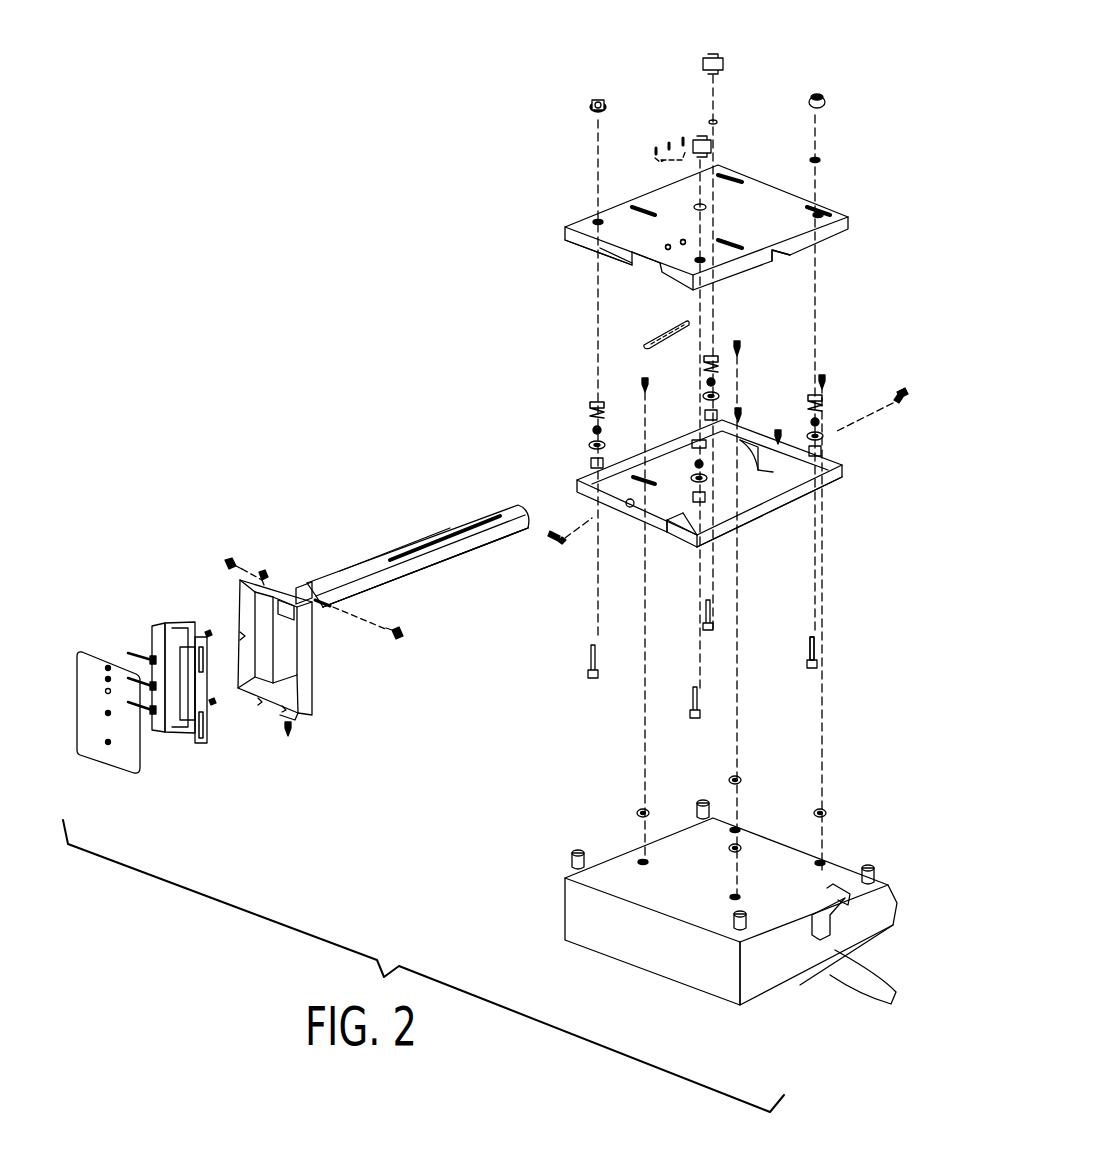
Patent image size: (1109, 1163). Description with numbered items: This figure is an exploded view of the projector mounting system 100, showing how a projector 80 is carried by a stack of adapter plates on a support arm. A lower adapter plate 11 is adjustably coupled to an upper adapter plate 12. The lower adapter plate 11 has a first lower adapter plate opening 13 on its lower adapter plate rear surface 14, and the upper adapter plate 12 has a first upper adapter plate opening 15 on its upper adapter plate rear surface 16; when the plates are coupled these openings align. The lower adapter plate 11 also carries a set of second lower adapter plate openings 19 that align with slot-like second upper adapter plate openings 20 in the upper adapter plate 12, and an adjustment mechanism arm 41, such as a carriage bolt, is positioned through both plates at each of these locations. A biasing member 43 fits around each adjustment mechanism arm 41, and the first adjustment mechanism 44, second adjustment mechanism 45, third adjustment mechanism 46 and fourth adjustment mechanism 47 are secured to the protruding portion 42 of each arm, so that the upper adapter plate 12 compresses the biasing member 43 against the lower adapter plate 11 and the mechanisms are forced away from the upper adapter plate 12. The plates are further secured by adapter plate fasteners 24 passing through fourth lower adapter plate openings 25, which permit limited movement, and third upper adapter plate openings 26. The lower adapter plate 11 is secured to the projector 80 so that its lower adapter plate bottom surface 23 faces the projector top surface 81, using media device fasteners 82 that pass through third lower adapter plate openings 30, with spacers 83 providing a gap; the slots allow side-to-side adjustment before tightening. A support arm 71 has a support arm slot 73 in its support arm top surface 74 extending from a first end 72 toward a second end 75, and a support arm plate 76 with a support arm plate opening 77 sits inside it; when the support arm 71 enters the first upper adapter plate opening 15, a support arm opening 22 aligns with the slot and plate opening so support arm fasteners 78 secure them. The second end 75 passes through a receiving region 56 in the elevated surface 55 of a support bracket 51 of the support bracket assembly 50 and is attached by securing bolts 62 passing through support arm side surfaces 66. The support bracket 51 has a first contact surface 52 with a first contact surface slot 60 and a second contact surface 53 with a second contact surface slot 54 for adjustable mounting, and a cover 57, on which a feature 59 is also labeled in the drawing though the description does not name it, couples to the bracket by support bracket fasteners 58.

The projector mounting system 100 is at (341, 234).
The lower adapter plate 11 is at (845, 482).
The upper adapter plate 12 is at (850, 222).
The first lower adapter plate opening 13 is at (650, 525).
The lower adapter plate rear surface 14 is at (690, 535).
The first upper adapter plate opening 15 is at (646, 268).
The upper adapter plate rear surface 16 is at (565, 240).
The second lower adapter plate openings 19 is at (703, 440).
The second upper adapter plate openings 20 is at (830, 232).
The support arm opening 22 is at (683, 239).
The lower adapter plate bottom surface 23 is at (830, 490).
The adapter plate fasteners 24 is at (548, 538).
The fourth lower adapter plate openings 25 is at (626, 503).
The third upper adapter plate openings 26 is at (620, 262).
The third lower adapter plate openings 30 is at (740, 440).
The adjustment mechanism arm 41 is at (818, 662).
The protruding portion 42 is at (815, 640).
The biasing member 43 is at (822, 412).
The first adjustment mechanism 44 is at (700, 136).
The second adjustment mechanism 45 is at (596, 98).
The third adjustment mechanism 46 is at (716, 54).
The fourth adjustment mechanism 47 is at (814, 92).
The support bracket assembly 50 is at (174, 668).
The support bracket 51 is at (196, 745).
The first contact surface 52 is at (158, 625).
The second contact surface 53 is at (203, 735).
The second contact surface slot 54 is at (204, 665).
The elevated surface 55 is at (178, 748).
The receiving region 56 is at (182, 624).
The cover 57 is at (312, 698).
The support bracket fasteners 58 is at (262, 570).
The opening 59 is at (294, 610).
The first contact surface slot 60 is at (150, 645).
The securing bolts 62 is at (226, 560).
The support arm side surfaces 66 is at (352, 600).
The support arm 71 is at (448, 563).
The first end 72 is at (518, 505).
The support arm slot 73 is at (430, 547).
The support arm top surface 74 is at (372, 563).
The second end 75 is at (305, 586).
The support arm plate 76 is at (650, 345).
The support arm plate opening 77 is at (650, 380).
The support arm fasteners 78 is at (683, 136).
The projector 80 is at (573, 908).
The projector top surface 81 is at (602, 866).
The media device fasteners 82 is at (740, 343).
The spacers 83 is at (826, 813).